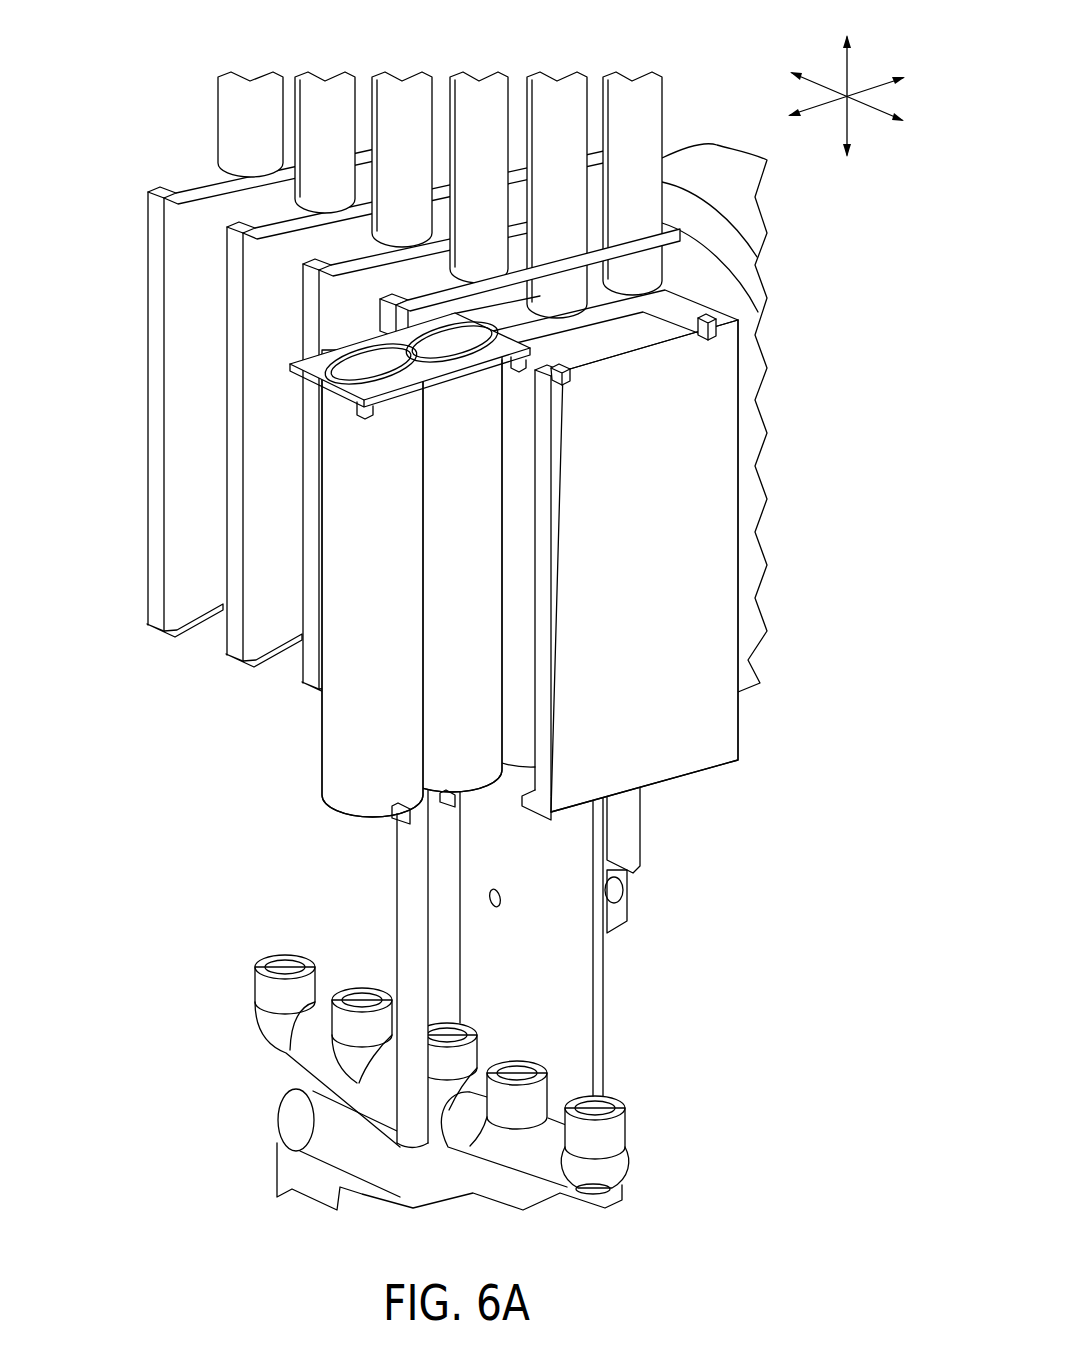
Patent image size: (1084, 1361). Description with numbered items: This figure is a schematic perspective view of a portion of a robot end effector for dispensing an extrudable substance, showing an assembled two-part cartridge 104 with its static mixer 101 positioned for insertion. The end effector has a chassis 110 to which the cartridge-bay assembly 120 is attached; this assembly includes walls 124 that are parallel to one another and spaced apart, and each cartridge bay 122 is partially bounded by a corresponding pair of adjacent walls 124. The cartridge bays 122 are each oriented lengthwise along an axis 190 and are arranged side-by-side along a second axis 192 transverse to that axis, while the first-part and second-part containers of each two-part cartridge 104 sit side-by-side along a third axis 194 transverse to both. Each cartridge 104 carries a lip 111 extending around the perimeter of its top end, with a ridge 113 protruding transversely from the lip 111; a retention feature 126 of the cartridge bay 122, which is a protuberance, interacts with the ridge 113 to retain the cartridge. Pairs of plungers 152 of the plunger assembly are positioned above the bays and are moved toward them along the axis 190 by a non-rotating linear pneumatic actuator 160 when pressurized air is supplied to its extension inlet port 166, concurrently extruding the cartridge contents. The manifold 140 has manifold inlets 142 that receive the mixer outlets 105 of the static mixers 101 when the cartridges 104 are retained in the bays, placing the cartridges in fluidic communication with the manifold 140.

The static mixer 101 is at (397, 878).
The two-part cartridge 104 is at (322, 760).
The mixer outlet 105 is at (407, 1160).
The chassis 110 is at (600, 948).
The lip 111 is at (310, 362).
The ridge 113 is at (365, 416).
The cartridge-bay assembly 120 is at (118, 632).
The cartridge bay 122 is at (633, 330).
The wall 124 is at (148, 300).
The retention feature 126 is at (557, 363).
The manifold 140 is at (258, 1017).
The manifold inlet 142 is at (530, 1050).
The plunger 152 is at (540, 85).
The non-rotating linear pneumatic actuator 160 is at (640, 842).
The extension inlet port 166 is at (630, 891).
The axis 190 is at (850, 62).
The second axis 192 is at (817, 78).
The third axis 194 is at (877, 80).